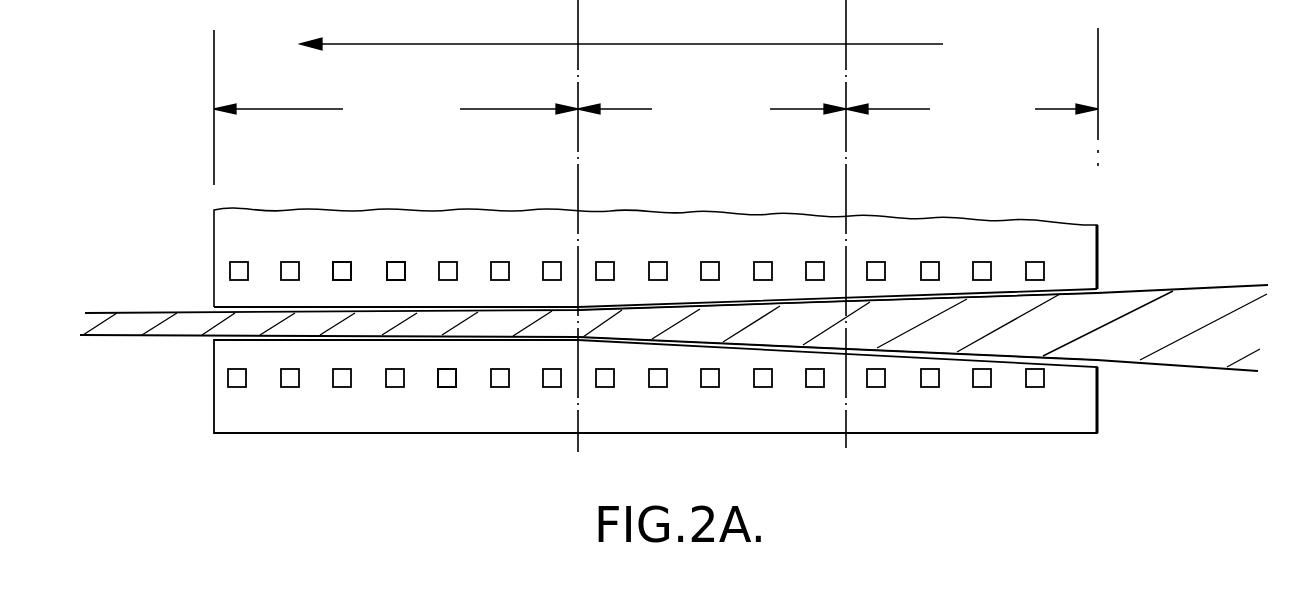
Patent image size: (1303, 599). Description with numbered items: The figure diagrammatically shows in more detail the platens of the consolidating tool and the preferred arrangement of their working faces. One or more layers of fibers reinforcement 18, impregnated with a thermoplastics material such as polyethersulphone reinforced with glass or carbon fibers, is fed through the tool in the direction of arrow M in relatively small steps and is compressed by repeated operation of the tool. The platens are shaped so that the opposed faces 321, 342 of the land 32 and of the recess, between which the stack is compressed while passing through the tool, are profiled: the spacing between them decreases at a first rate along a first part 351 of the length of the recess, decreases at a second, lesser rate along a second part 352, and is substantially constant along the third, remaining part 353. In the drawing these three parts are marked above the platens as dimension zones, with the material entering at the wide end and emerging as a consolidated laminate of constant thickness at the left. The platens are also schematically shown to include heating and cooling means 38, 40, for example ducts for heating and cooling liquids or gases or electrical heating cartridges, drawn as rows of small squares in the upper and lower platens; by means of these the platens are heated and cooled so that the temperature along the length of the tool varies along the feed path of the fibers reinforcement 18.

The fibers reinforcement 18 is at (1102, 335).
The land 32 is at (666, 255).
The heating and cooling means 38 is at (447, 270).
The heating and cooling means 40 is at (395, 270).
The opposed face of the land 321 is at (747, 307).
The opposed face of the recess 342 is at (680, 342).
The first part of the recess length 351 is at (972, 111).
The second part of the recess length 352 is at (712, 111).
The third part of the recess length 353 is at (396, 111).
The direction of feed M is at (621, 27).